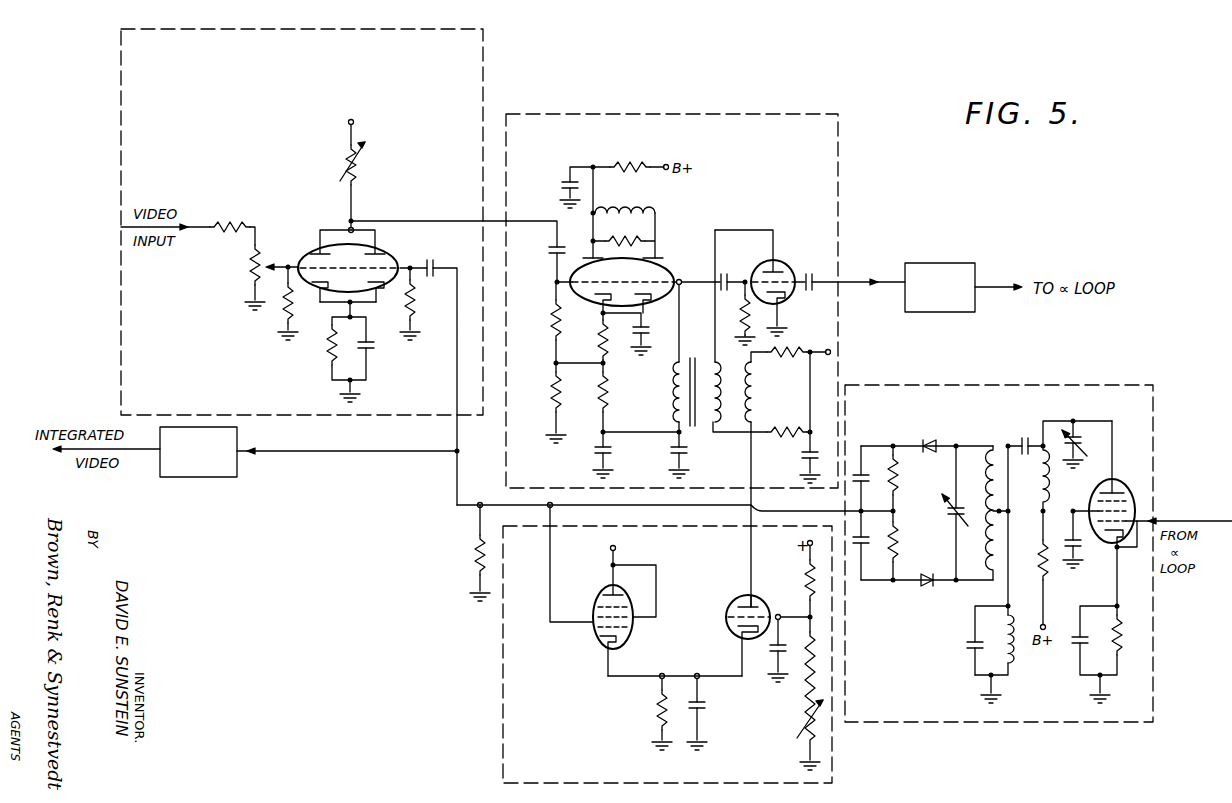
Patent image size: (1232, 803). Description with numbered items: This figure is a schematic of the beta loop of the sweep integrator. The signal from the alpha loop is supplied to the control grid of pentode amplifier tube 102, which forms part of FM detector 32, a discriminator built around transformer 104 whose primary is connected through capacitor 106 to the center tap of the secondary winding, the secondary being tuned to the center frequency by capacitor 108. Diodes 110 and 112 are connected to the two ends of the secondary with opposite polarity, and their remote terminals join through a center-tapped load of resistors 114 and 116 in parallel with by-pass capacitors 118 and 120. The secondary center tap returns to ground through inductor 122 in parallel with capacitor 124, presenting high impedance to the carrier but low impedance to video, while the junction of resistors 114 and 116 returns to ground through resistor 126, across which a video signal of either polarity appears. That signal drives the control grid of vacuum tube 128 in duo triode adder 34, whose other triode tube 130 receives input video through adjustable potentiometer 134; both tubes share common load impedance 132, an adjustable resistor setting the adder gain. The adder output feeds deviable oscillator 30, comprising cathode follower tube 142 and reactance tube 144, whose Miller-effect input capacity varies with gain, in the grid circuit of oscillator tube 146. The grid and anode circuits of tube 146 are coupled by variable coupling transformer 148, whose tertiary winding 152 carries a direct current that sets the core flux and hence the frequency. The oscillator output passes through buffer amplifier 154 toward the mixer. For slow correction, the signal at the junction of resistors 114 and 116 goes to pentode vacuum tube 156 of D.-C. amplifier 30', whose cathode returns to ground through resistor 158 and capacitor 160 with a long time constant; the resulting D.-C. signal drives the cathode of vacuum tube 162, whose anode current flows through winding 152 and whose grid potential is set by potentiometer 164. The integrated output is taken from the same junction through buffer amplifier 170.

The deviable oscillator 30 is at (672, 285).
The D.-C. amplifier 30' is at (630, 654).
The FM detector 32 is at (972, 385).
The duo triode adder 34 is at (487, 56).
The pentode amplifier tube 102 is at (1113, 486).
The transformer 104 is at (1043, 444).
The capacitor 106 is at (1027, 462).
The capacitor 108 is at (950, 506).
The diode 110 is at (930, 440).
The diode 112 is at (938, 592).
The resistor 114 is at (930, 481).
The resistor 116 is at (930, 543).
The capacitor 118 is at (858, 468).
The capacitor 120 is at (856, 552).
The inductor 122 is at (1015, 659).
The capacitor 124 is at (975, 653).
The resistor 126 is at (478, 549).
The vacuum tube 128 is at (385, 257).
The triode tube 130 is at (312, 250).
The common load impedance 132 is at (362, 160).
The adjustable potentiometer 134 is at (254, 266).
The cathode follower tube 142 is at (557, 289).
The reactance tube 144 is at (660, 262).
The vacuum tube 146 is at (778, 262).
The variable coupling transformer 148 is at (688, 428).
The tertiary winding 152 is at (760, 386).
The buffer amplifier 154 is at (935, 263).
The pentode vacuum tube 156 is at (600, 650).
The resistor 158 is at (658, 719).
The capacitor 160 is at (704, 715).
The vacuum tube 162 is at (750, 595).
The potentiometer 164 is at (797, 741).
The buffer amplifier 170 is at (203, 478).